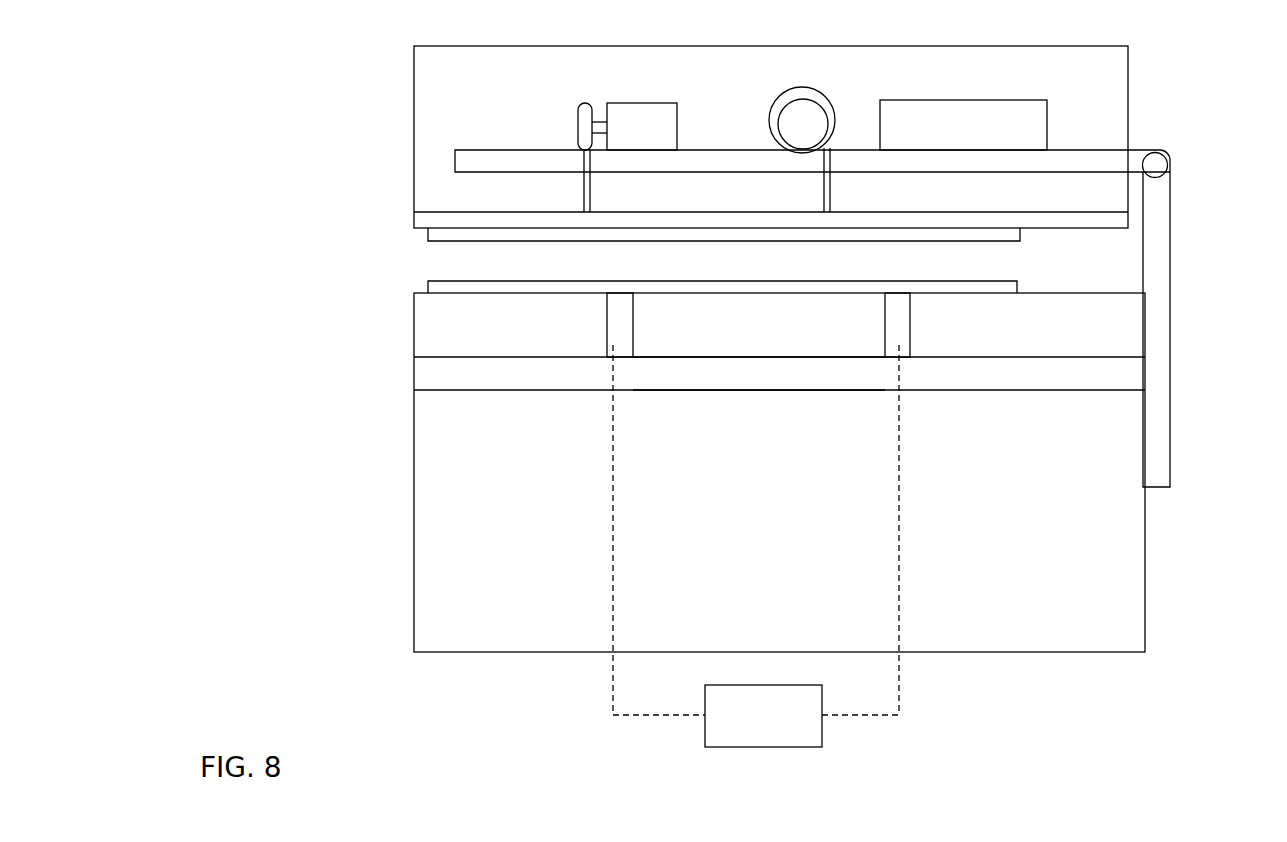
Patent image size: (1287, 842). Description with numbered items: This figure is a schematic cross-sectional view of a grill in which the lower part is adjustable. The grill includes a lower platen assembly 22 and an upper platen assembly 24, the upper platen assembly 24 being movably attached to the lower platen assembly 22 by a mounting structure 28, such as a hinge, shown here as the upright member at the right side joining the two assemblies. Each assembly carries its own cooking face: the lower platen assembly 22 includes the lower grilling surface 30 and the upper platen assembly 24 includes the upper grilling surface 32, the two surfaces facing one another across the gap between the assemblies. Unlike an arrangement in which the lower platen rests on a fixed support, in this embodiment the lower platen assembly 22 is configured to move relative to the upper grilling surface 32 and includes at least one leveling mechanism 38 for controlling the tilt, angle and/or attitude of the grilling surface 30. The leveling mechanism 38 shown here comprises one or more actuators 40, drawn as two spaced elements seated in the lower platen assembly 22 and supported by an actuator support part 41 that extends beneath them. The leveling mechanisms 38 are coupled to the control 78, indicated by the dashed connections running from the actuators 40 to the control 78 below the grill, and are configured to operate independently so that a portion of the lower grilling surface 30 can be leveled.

The lower platen assembly 22 is at (308, 505).
The upper platen assembly 24 is at (310, 118).
The mounting structure 28 is at (1212, 154).
The grilling surface 30 is at (470, 281).
The grilling surface 32 is at (445, 241).
The leveling mechanism 38 is at (866, 328).
The actuator 40 is at (612, 333).
The actuator support part 41 is at (835, 382).
The control 78 is at (763, 716).